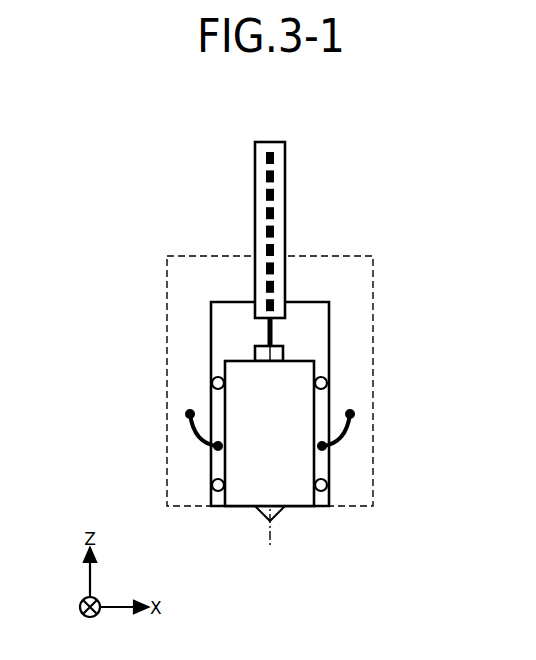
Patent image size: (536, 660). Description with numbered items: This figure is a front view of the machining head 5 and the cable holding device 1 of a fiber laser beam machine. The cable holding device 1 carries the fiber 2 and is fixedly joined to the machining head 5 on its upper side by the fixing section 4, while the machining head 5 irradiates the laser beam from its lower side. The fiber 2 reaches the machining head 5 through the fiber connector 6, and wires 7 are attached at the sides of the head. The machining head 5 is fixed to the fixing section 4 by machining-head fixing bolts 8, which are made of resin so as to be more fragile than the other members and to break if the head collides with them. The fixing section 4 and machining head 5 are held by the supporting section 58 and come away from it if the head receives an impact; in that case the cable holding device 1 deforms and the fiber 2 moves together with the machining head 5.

The cable holding device 1 is at (268, 141).
The fiber 2 is at (274, 178).
The fixing section 4 is at (314, 302).
The machining head 5 is at (300, 398).
The fiber connector 6 is at (283, 352).
The wires 7 is at (200, 437).
The machining-head fixing bolts 8 is at (327, 383).
The supporting section 58 is at (197, 255).